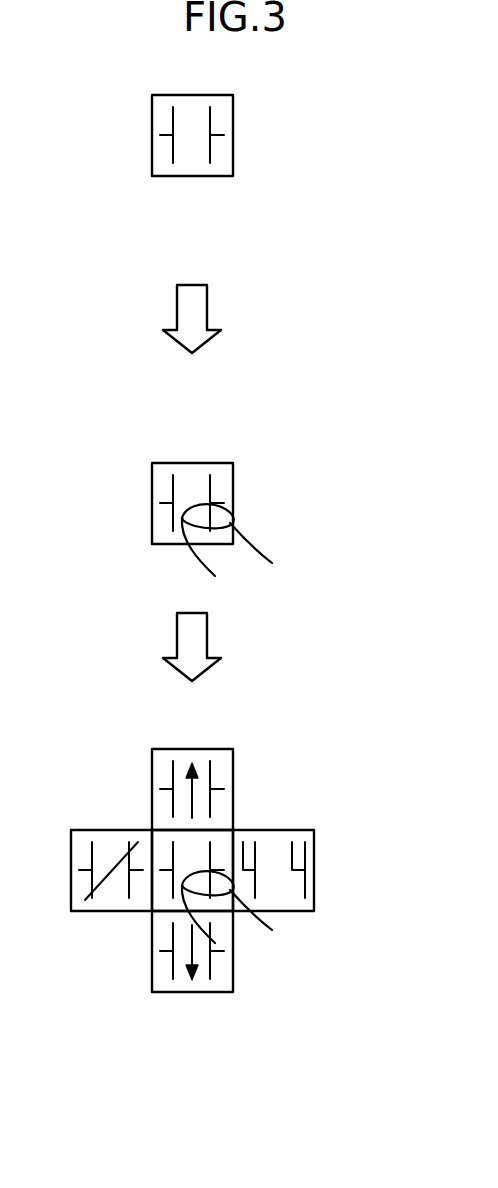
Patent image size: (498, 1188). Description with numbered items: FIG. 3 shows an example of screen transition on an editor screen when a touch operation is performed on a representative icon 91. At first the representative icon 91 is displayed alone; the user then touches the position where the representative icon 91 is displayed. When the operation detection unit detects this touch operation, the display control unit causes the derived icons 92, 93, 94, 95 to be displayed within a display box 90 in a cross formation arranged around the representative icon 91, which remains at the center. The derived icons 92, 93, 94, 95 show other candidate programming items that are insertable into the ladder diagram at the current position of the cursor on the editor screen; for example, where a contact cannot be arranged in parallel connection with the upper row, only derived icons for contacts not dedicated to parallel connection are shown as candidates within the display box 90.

The display box 90 is at (233, 868).
The representative icon 91 is at (233, 133).
The derived icon 92 is at (233, 757).
The derived icon 93 is at (233, 975).
The derived icon 94 is at (314, 882).
The derived icon 95 is at (104, 829).